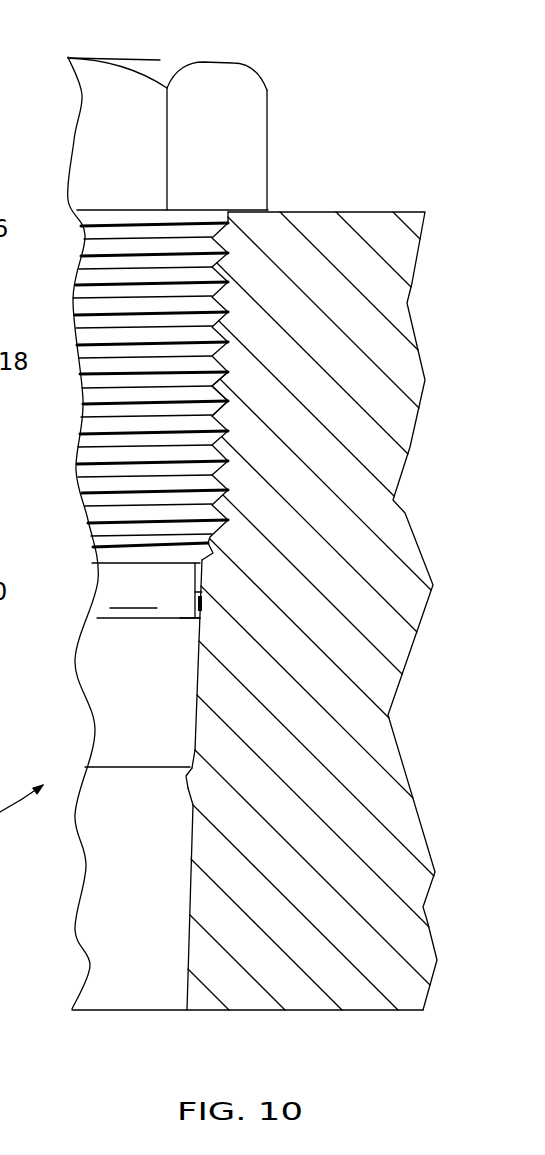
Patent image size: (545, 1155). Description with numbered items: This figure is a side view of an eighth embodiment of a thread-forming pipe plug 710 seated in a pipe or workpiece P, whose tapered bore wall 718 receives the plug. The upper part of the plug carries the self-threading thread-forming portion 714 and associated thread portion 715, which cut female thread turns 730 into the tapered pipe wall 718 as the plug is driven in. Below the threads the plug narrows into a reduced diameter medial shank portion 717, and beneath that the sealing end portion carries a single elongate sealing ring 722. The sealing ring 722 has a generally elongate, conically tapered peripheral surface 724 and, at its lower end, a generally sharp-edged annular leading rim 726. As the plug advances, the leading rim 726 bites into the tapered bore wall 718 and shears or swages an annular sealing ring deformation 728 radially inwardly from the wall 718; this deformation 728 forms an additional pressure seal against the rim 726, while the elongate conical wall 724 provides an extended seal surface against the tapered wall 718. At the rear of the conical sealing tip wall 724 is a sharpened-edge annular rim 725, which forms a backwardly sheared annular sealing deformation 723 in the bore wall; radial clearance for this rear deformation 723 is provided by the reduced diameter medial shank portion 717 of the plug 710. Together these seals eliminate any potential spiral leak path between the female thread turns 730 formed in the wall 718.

The pipe plug 710 is at (320, 86).
The thread-forming portion 714 is at (226, 347).
The thread portion 715 is at (237, 310).
The female thread turns 730 is at (223, 418).
The reduced diameter medial shank portion 717 is at (146, 590).
The rear annular sealing deformation 723 is at (212, 604).
The rear sharpened-edge annular rim 725 is at (213, 618).
The tapered bore wall 718 is at (192, 655).
The conically tapered peripheral surface 724 is at (204, 719).
The sealing ring 722 is at (144, 747).
The leading rim 726 is at (185, 768).
The annular sealing ring deformation 728 is at (183, 782).
The pedicle bone P is at (348, 872).